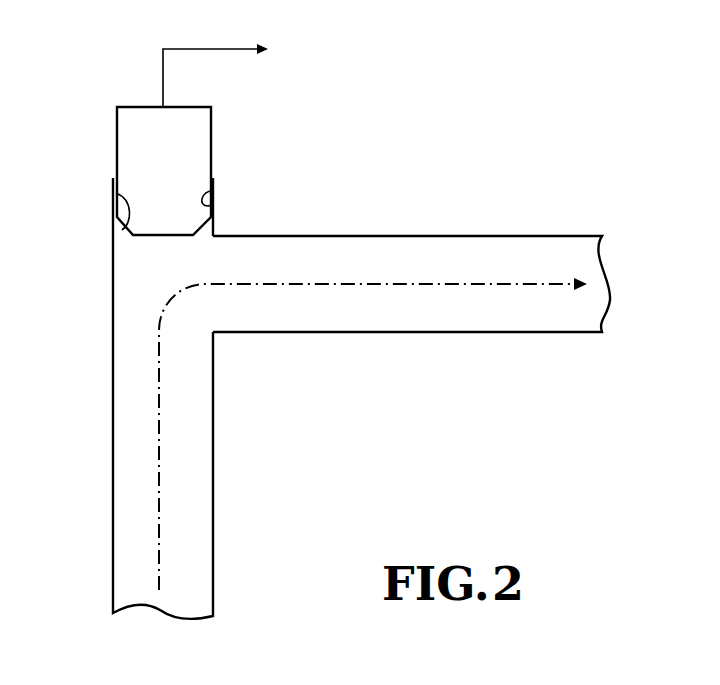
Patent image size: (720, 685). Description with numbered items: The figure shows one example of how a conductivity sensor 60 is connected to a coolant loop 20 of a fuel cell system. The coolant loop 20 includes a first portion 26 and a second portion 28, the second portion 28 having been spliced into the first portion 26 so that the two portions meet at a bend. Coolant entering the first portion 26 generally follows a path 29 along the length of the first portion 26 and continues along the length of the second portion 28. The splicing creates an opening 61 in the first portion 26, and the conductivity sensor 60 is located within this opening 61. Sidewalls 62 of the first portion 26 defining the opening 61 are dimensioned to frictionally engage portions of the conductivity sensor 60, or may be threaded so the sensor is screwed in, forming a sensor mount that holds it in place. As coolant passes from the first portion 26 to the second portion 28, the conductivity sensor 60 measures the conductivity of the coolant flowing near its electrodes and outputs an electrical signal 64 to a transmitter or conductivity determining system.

The coolant loop 20 is at (323, 380).
The first portion 26 is at (131, 467).
The second portion 28 is at (462, 253).
The path 29 is at (340, 310).
The conductivity sensor 60 is at (126, 133).
The opening 61 is at (154, 248).
The sidewalls 62 is at (122, 230).
The electrical signal 64 is at (160, 82).